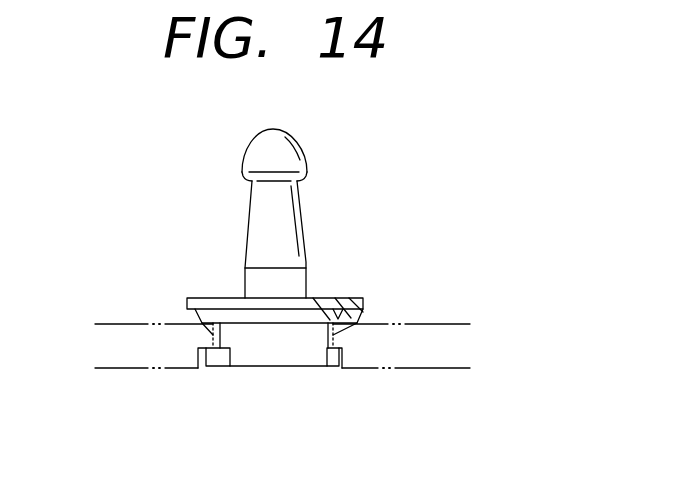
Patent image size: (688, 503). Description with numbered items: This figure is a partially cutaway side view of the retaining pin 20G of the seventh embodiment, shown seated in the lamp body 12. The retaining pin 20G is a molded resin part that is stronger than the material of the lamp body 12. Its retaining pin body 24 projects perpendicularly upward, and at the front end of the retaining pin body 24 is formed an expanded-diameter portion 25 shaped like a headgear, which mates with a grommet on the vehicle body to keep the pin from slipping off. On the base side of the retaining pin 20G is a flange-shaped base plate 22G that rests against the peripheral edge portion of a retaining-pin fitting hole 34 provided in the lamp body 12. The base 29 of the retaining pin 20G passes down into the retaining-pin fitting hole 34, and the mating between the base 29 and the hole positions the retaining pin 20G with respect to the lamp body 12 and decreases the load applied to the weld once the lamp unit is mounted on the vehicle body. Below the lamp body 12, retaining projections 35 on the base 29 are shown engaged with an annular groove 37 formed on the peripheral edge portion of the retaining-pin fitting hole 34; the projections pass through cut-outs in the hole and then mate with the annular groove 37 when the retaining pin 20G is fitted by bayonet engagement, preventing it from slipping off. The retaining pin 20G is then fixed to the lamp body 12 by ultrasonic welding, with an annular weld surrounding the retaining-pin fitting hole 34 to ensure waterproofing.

The lamp body 12 is at (422, 324).
The retaining pin 20G is at (230, 214).
The flange-shaped base plate 22G is at (183, 297).
The retaining pin body 24 is at (302, 215).
The expanded-diameter portion 25 is at (305, 150).
The base 29 is at (278, 362).
The retaining-pin fitting hole 34 is at (213, 296).
The retaining projections 35 is at (220, 368).
The annular groove 37 is at (205, 368).